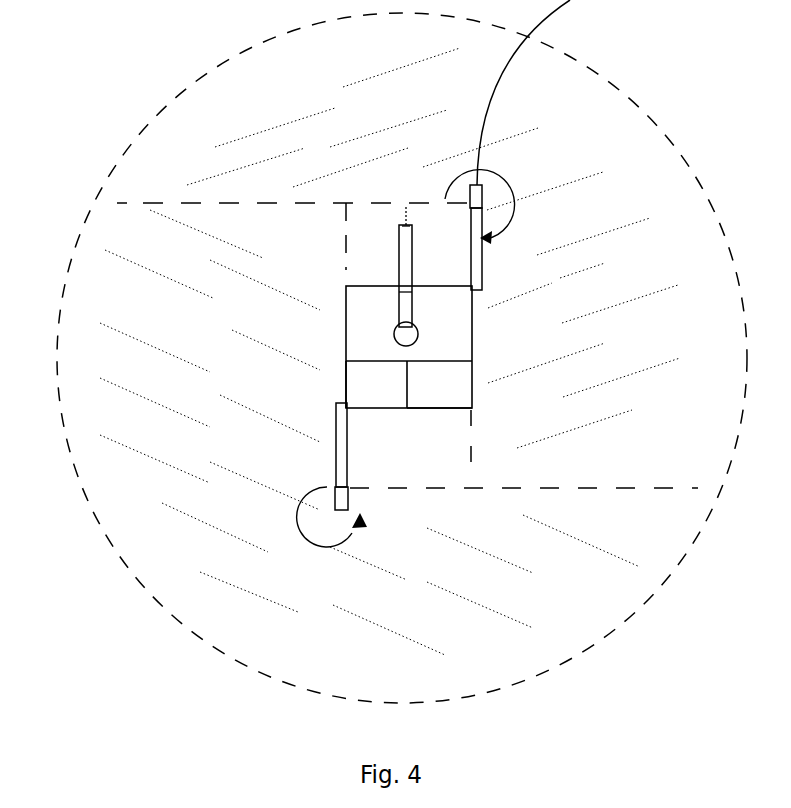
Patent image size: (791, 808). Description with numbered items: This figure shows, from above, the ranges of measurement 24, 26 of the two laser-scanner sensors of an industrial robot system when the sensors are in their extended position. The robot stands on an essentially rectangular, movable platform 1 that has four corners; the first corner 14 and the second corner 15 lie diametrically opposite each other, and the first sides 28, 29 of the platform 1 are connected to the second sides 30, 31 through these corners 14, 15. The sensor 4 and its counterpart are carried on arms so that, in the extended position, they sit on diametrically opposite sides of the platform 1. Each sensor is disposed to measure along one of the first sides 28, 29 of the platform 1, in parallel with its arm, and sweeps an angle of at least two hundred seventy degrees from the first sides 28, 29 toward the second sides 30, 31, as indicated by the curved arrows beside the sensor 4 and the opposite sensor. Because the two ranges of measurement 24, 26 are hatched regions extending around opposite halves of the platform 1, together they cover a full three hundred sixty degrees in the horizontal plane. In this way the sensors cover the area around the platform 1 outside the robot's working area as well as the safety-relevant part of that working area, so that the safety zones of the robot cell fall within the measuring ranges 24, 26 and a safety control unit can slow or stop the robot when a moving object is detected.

The platform 1 is at (455, 328).
The sensor 4 is at (340, 500).
The first corner 14 is at (469, 287).
The second corner 15 is at (346, 412).
The range of measurement 24 is at (205, 450).
The range of measurement 26 is at (647, 276).
The first side 28 is at (346, 327).
The first side 29 is at (472, 345).
The second side 30 is at (439, 410).
The second side 31 is at (370, 286).